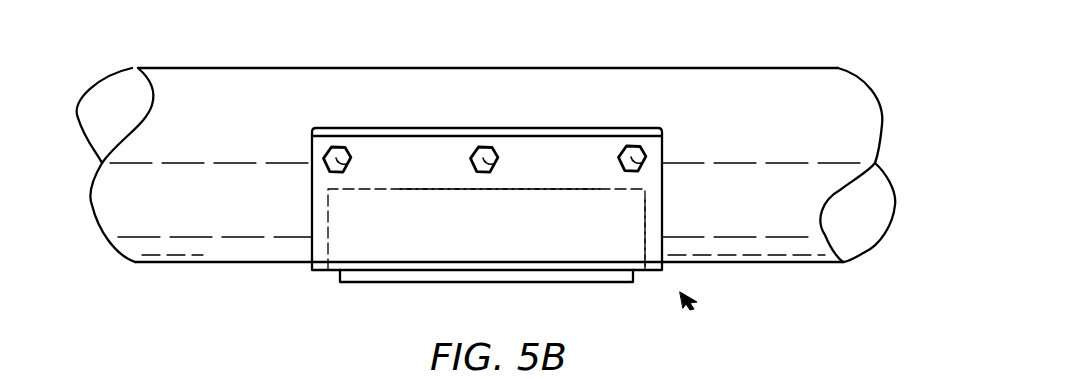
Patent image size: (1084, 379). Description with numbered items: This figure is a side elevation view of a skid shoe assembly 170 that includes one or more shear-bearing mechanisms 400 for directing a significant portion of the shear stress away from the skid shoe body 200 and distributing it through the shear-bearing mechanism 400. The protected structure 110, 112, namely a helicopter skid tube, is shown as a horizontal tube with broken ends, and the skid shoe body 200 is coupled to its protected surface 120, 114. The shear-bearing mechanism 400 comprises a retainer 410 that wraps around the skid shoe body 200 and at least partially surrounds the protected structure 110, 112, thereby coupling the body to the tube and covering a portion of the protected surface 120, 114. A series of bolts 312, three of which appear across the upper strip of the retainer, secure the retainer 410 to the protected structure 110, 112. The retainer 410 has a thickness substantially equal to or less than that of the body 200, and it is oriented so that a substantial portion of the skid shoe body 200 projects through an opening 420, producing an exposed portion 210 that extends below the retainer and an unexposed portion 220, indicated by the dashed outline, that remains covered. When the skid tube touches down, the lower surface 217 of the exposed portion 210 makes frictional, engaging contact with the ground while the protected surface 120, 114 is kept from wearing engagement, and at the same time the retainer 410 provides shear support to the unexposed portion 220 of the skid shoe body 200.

The protected structure 110 is at (486, 148).
The helicopter skid tube 112 is at (242, 68).
The protected surface 120 is at (486, 238).
The protected surface 114 is at (192, 215).
The shear-bearing mechanism 400 is at (487, 183).
The retainer 410 is at (433, 136).
The bolt 312 is at (352, 158).
The skid shoe body 200 is at (327, 215).
The unexposed portion 220 is at (527, 205).
The opening 420 is at (645, 212).
The lower surface 217 is at (496, 293).
The exposed portion 210 is at (570, 277).
The skid shoe assembly 170 is at (693, 303).